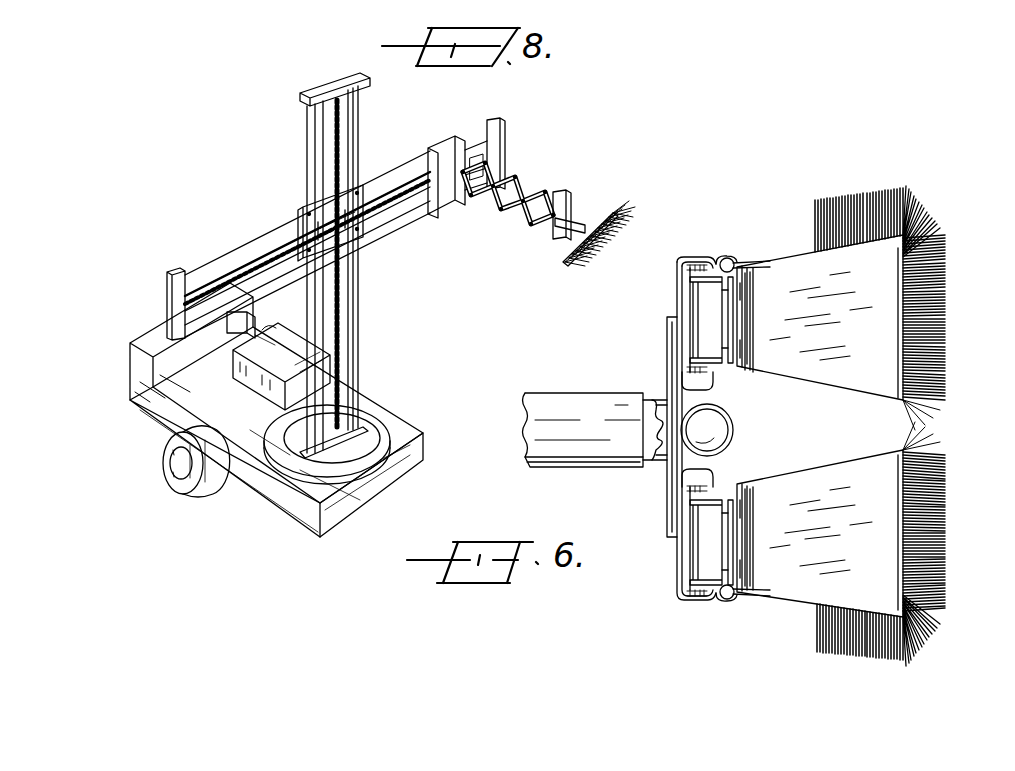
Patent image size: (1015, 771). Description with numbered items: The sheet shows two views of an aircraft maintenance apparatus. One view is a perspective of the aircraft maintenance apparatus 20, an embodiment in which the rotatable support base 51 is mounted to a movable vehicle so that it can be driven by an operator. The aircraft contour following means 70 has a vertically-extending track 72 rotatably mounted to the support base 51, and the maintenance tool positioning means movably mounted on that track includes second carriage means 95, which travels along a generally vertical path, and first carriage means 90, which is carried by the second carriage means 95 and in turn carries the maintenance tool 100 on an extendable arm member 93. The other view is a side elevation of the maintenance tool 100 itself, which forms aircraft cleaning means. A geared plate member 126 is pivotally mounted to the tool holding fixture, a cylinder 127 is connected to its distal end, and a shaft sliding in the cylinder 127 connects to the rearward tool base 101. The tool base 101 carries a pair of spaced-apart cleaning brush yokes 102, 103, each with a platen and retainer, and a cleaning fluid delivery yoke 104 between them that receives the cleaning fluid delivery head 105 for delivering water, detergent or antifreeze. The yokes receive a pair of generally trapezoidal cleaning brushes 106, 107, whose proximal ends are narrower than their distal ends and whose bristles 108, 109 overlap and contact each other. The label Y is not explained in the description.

In FIG. 8, the aircraft maintenance apparatus 20 is at (140, 155).
In FIG. 8, the cart base Y is at (273, 493).
In FIG. 8, the support base 51 is at (375, 443).
In FIG. 8, the vertically-extending track 72 is at (362, 337).
In FIG. 8, the aircraft contour following means 70 is at (418, 237).
In FIG. 8, the second carriage means 95 is at (297, 205).
In FIG. 8, the first carriage means 90 is at (432, 135).
In FIG. 8, the extendable arm member 93 is at (527, 175).
In FIG. 8, the maintenance tool 100 is at (613, 195).
In FIG. 6, the maintenance tool 100 is at (762, 150).
In FIG. 6, the tool base 101 is at (665, 537).
In FIG. 6, the cleaning brush yoke 102 is at (713, 255).
In FIG. 6, the cleaning brush yoke 103 is at (715, 600).
In FIG. 6, the cleaning fluid delivery yoke 104 is at (723, 403).
In FIG. 6, the cleaning fluid delivery head 105 is at (735, 425).
In FIG. 6, the cleaning brush 106 is at (780, 265).
In FIG. 6, the cleaning brush 107 is at (790, 590).
In FIG. 6, the bristles 108 is at (945, 285).
In FIG. 6, the bristles 109 is at (945, 545).
In FIG. 6, the plate member 126 is at (665, 400).
In FIG. 6, the cylinder 127 is at (566, 352).